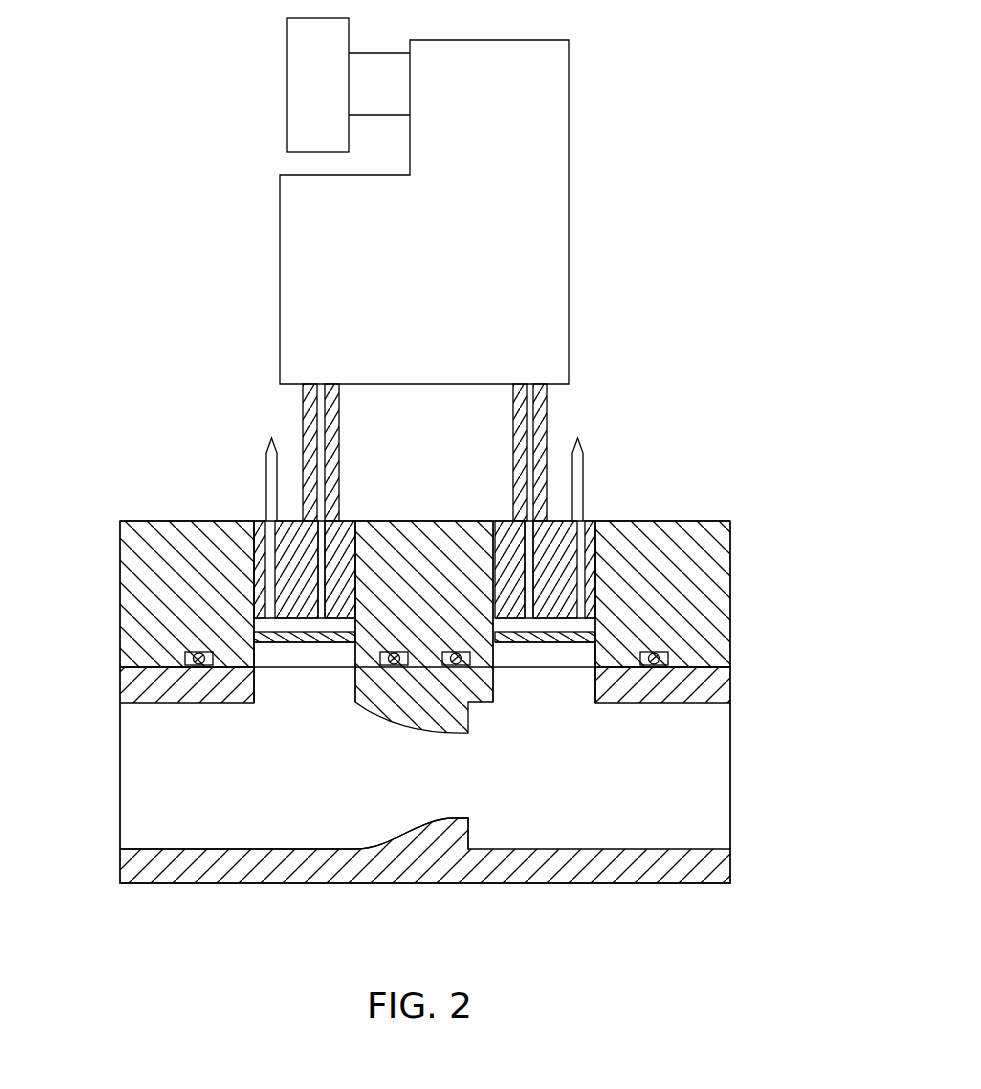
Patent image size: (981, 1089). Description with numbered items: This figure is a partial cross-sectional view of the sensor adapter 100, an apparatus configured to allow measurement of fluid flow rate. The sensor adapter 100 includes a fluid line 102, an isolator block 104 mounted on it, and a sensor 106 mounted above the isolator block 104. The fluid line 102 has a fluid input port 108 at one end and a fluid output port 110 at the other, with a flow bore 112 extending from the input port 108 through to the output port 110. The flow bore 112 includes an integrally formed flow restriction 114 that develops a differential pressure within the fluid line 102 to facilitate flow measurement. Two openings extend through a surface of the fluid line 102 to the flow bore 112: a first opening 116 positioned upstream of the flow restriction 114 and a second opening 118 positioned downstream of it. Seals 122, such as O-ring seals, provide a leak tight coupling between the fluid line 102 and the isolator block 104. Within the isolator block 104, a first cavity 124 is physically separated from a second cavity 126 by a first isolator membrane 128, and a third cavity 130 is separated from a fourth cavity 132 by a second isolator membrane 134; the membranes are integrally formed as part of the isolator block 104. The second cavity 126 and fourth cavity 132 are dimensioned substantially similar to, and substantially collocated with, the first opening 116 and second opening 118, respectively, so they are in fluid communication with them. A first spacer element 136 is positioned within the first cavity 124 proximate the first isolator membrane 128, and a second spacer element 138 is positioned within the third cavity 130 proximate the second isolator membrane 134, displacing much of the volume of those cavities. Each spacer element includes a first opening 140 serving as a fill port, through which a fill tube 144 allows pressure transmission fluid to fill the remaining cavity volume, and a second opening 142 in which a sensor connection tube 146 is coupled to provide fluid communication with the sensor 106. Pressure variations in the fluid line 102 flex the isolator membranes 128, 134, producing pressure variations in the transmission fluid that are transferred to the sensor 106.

The sensor adapter 100 is at (612, 223).
The fluid line 102 is at (315, 848).
The isolator block 104 is at (142, 488).
The sensor 106 is at (280, 298).
The fluid input port 108 is at (120, 781).
The fluid output port 110 is at (730, 782).
The flow bore 112 is at (258, 838).
The flow restriction 114 is at (420, 824).
The first opening 116 is at (273, 690).
The second opening 118 is at (567, 690).
The seals 122 is at (185, 660).
The first cavity 124 is at (253, 595).
The second cavity 126 is at (310, 658).
The first isolator membrane 128 is at (267, 637).
The third cavity 130 is at (595, 593).
The fourth cavity 132 is at (525, 658).
The second isolator membrane 134 is at (577, 637).
The first spacer element 136 is at (253, 562).
The second spacer element 138 is at (592, 572).
The first opening 140 is at (270, 548).
The second opening 142 is at (322, 583).
The fill tube 144 is at (266, 470).
The sensor connection tube 146 is at (339, 456).